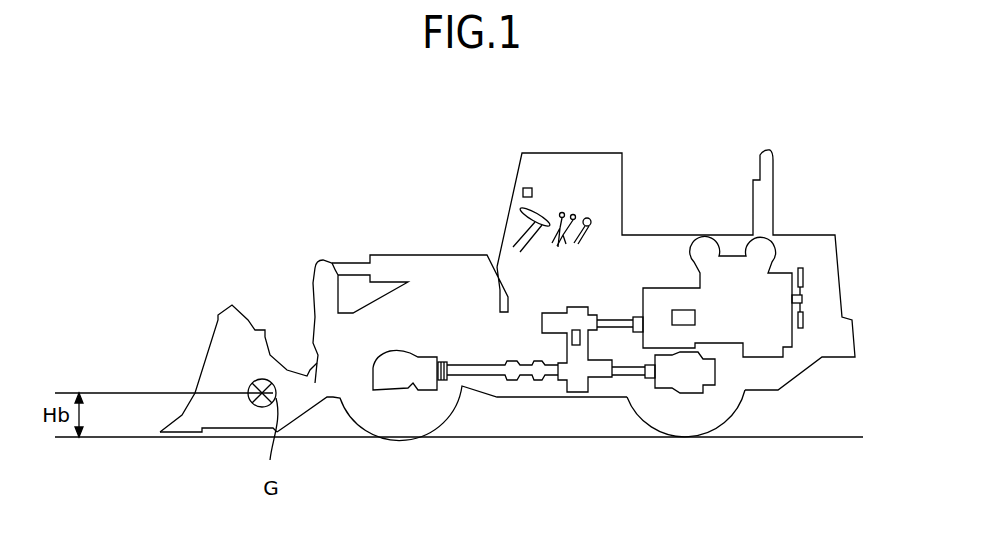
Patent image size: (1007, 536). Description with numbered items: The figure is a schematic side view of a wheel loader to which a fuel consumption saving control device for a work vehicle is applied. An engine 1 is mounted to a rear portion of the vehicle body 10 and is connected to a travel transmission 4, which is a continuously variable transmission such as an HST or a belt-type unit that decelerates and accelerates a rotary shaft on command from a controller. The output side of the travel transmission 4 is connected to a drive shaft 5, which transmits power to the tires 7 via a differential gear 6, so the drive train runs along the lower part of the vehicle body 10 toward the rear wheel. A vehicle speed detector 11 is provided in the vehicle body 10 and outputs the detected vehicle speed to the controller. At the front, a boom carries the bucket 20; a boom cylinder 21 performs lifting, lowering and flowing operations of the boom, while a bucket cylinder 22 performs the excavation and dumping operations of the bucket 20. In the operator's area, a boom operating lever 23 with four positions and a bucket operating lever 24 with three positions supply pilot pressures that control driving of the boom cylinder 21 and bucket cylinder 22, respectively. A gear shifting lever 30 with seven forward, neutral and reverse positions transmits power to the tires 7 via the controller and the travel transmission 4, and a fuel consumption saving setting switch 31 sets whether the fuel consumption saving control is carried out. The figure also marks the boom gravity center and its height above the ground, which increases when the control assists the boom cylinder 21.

The engine 1 is at (780, 285).
The travel transmission 4 is at (578, 307).
The drive shaft 5 is at (635, 377).
The differential gear 6 is at (717, 382).
The tires 7 is at (743, 400).
The vehicle body 10 is at (713, 233).
The vehicle speed detector 11 is at (679, 318).
The bucket 20 is at (210, 368).
The boom cylinder 21 is at (315, 383).
The bucket cylinder 22 is at (387, 255).
The boom operating lever 23 is at (561, 212).
The bucket operating lever 24 is at (575, 215).
The gear shifting lever 30 is at (590, 219).
The fuel consumption saving setting switch 31 is at (521, 190).